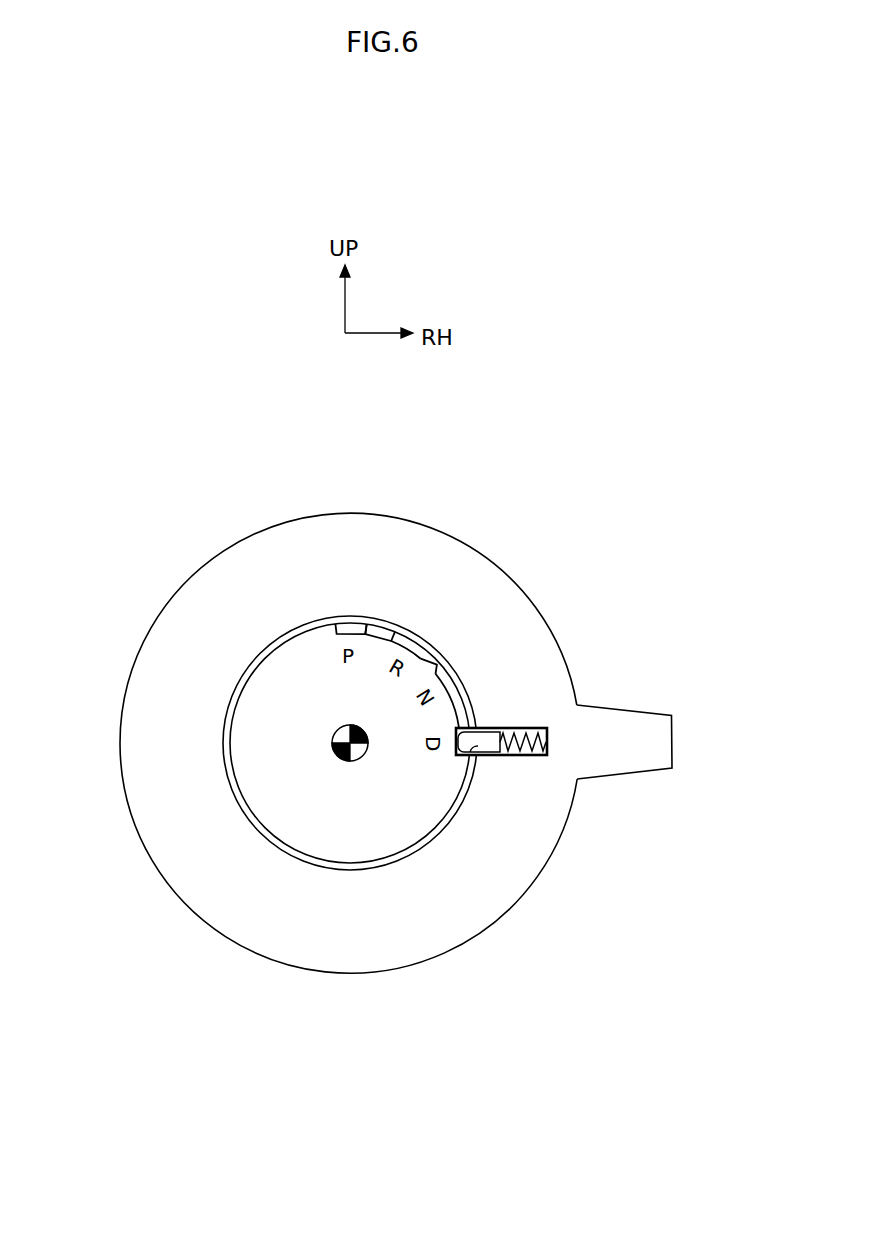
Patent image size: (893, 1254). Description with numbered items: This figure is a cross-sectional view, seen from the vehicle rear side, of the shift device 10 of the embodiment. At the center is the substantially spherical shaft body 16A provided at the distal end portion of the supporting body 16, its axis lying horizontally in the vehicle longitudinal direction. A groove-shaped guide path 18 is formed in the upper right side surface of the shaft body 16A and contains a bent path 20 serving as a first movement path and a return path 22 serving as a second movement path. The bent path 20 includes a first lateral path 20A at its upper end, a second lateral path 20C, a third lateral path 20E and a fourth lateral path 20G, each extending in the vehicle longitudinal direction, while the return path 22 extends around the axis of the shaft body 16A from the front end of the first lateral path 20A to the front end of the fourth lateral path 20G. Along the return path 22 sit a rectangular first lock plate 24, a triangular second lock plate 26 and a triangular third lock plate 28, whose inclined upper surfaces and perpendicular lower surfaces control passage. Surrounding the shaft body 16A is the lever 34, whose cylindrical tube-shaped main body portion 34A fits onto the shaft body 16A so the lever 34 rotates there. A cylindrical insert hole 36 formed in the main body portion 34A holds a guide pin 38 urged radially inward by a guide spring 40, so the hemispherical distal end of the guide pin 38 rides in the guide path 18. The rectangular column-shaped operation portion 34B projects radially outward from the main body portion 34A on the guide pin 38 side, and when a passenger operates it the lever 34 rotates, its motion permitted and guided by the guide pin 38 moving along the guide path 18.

The shift device 10 is at (200, 464).
The supporting body 16 is at (349, 833).
The shaft body 16A is at (292, 820).
The guide path 18 is at (412, 638).
The bent path 20 is at (489, 633).
The first lateral path 20A is at (356, 622).
The second lateral path 20C is at (420, 646).
The third lateral path 20E is at (465, 690).
The fourth lateral path 20G is at (486, 756).
The return path 22 is at (455, 683).
The first lock plate 24 is at (381, 622).
The second lock plate 26 is at (450, 668).
The third lock plate 28 is at (478, 695).
The lever 34 is at (172, 600).
The main body portion 34A is at (158, 822).
The operation portion 34B is at (640, 710).
The insert hole 36 is at (533, 727).
The guide pin 38 is at (492, 756).
The guide spring 40 is at (548, 738).